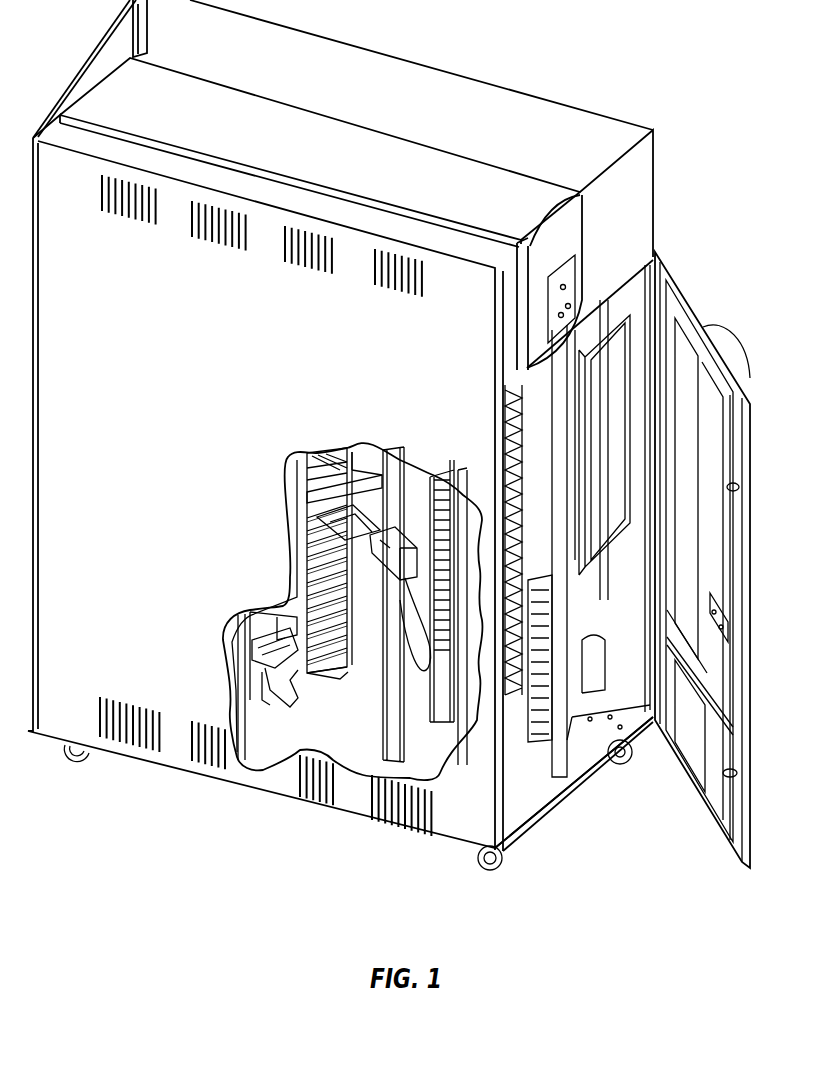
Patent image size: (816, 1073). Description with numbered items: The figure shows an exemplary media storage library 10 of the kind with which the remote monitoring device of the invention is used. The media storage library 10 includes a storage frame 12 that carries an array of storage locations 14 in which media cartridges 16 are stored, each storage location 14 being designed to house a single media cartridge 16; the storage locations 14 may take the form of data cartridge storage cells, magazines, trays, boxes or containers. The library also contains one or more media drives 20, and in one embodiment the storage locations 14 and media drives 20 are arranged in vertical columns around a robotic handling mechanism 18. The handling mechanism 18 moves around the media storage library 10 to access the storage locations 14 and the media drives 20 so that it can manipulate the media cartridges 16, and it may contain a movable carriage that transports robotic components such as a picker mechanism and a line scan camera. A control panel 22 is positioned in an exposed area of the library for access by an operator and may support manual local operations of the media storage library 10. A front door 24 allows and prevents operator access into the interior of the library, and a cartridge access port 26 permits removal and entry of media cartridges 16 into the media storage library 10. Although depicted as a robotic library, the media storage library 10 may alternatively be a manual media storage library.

The media storage library 10 is at (689, 52).
The storage frame 12 is at (328, 672).
The storage locations 14 is at (303, 603).
The media cartridges 16 is at (343, 535).
The handling mechanism 18 is at (433, 718).
The media drives 20 is at (263, 682).
The control panel 22 is at (566, 287).
The front door 24 is at (748, 610).
The cartridge access port 26 is at (600, 452).